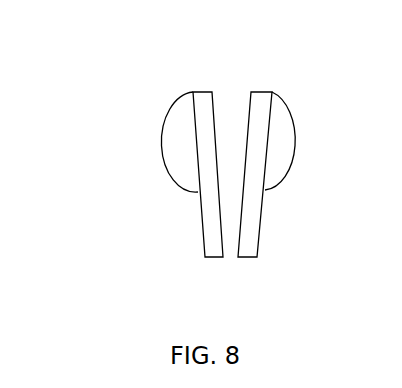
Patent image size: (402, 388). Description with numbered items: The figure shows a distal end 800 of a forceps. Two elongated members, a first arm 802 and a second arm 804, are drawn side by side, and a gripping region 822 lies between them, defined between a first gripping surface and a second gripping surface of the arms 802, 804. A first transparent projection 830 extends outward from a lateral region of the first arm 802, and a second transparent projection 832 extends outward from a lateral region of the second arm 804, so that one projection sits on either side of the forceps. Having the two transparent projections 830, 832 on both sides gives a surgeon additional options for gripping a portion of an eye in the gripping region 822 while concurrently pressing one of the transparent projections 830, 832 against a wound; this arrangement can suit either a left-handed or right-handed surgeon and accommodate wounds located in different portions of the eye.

The distal end 800 is at (128, 290).
The first arm 802 is at (256, 218).
The second arm 804 is at (212, 215).
The gripping region 822 is at (233, 108).
The first transparent projection 830 is at (287, 140).
The second transparent projection 832 is at (174, 131).